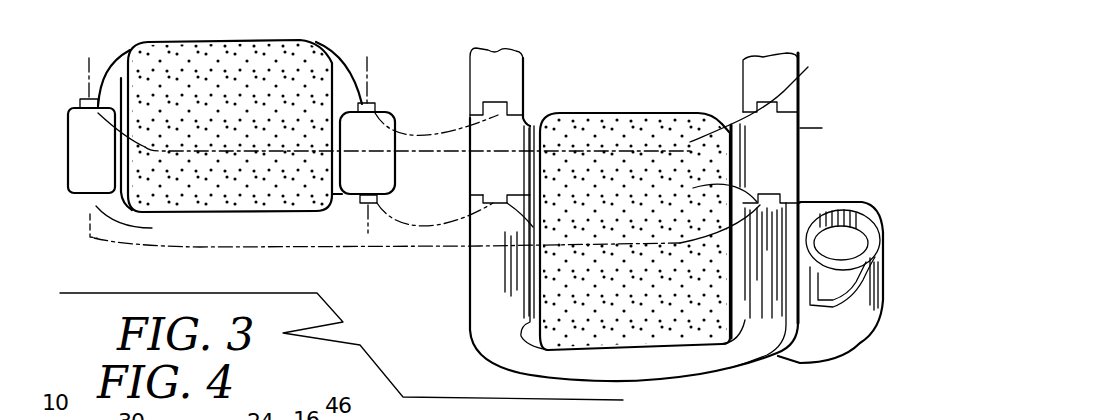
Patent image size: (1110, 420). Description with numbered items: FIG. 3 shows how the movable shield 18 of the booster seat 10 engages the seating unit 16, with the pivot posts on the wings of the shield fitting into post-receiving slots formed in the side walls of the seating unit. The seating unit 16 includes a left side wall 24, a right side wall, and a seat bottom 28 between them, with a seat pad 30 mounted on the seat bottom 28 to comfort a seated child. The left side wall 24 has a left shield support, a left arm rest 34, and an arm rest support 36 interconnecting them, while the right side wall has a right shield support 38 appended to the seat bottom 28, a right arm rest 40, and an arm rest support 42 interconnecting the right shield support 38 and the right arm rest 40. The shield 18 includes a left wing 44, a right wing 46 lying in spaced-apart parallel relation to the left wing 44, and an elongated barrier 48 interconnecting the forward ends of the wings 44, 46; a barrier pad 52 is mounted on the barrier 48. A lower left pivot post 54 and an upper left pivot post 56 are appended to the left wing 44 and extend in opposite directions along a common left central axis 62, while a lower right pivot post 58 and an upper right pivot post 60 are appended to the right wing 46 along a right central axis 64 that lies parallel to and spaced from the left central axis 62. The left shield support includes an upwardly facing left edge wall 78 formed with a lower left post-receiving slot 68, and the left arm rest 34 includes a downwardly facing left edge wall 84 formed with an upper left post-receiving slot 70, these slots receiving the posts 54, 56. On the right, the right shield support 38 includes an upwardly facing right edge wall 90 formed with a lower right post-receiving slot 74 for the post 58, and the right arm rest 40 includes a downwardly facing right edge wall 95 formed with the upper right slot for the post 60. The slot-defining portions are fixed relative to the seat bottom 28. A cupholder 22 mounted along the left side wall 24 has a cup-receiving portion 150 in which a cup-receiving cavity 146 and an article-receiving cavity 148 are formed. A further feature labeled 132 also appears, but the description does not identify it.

The booster seat 10 is at (825, 101).
The seating unit 16 is at (438, 308).
The shield 18 is at (81, 91).
The cupholder 22 is at (798, 374).
The left side wall 24 is at (813, 194).
The seat bottom 28 is at (474, 348).
The seat pad 30 is at (632, 127).
The left arm rest 34 is at (738, 78).
The arm rest support 36 is at (805, 149).
The right shield support 38 is at (469, 292).
The right arm rest 40 is at (530, 80).
The arm rest support 42 is at (466, 193).
The left wing 44 is at (60, 186).
The right wing 46 is at (399, 193).
The elongated barrier 48 is at (350, 57).
The barrier pad 52 is at (303, 57).
The lower left pivot post 54 is at (138, 223).
The upper left pivot post 56 is at (80, 106).
The lower right pivot post 58 is at (359, 202).
The upper right pivot post 60 is at (375, 108).
The left central axis 62 is at (94, 238).
The right central axis 64 is at (366, 60).
The lower left post-receiving slot 68 is at (712, 192).
The upper left post-receiving slot 70 is at (766, 96).
The lower right post-receiving slot 74 is at (626, 238).
The upwardly facing left edge wall 78 is at (788, 190).
The downwardly facing left edge wall 84 is at (825, 125).
The upwardly facing right edge wall 90 is at (481, 194).
The downwardly facing right edge wall 95 is at (529, 119).
The gap 132 is at (767, 298).
The cup-receiving cavity 146 is at (839, 248).
The article-receiving cavity 148 is at (826, 298).
The cup-receiving portion 150 is at (834, 366).